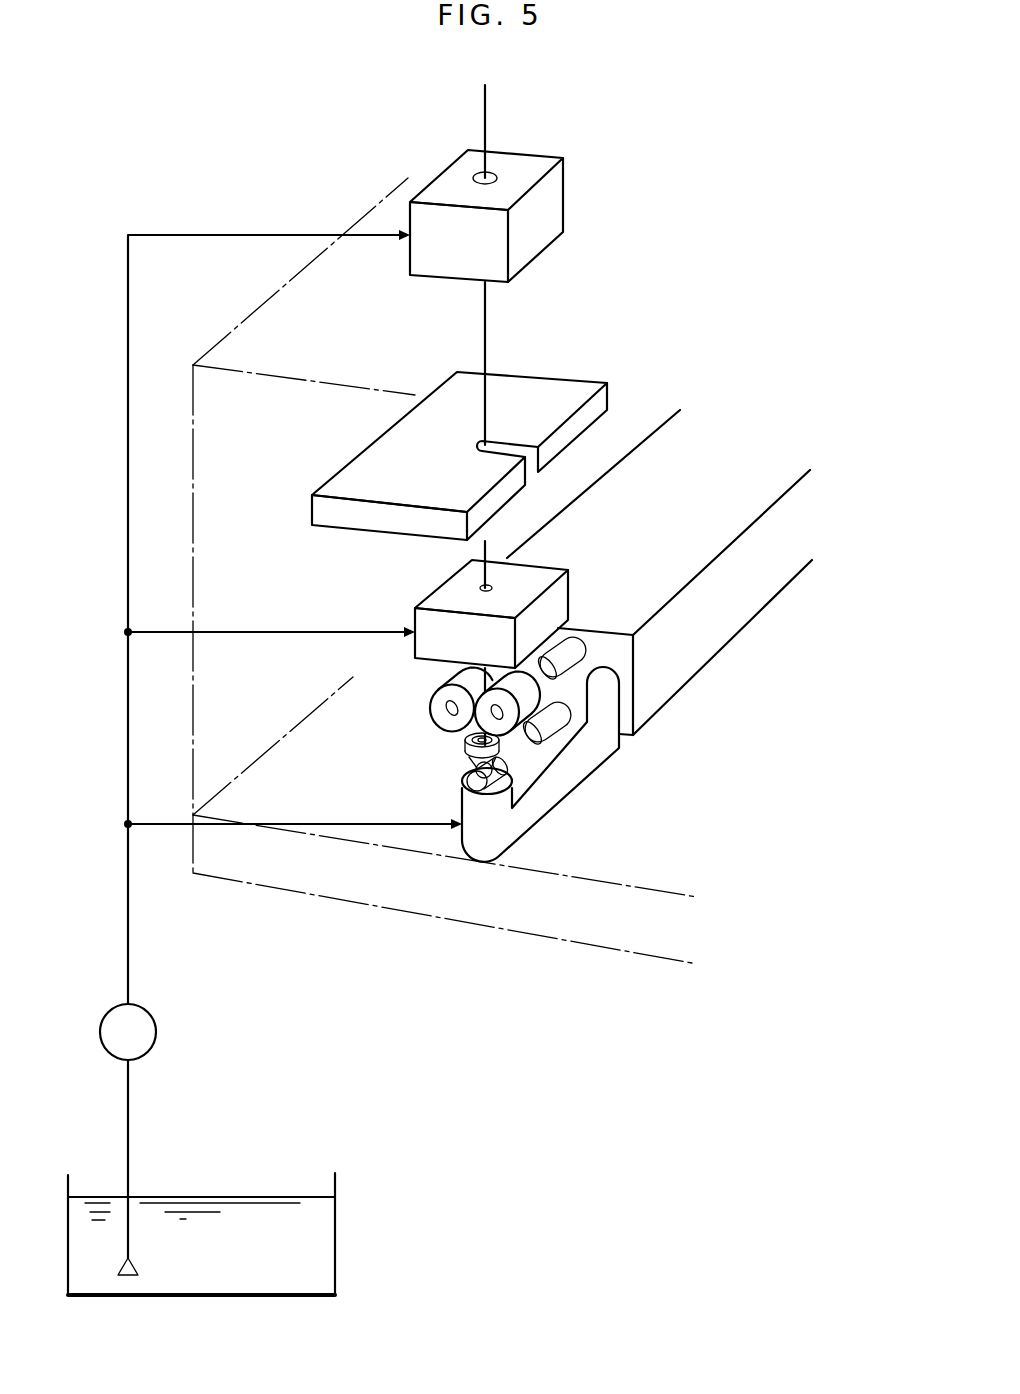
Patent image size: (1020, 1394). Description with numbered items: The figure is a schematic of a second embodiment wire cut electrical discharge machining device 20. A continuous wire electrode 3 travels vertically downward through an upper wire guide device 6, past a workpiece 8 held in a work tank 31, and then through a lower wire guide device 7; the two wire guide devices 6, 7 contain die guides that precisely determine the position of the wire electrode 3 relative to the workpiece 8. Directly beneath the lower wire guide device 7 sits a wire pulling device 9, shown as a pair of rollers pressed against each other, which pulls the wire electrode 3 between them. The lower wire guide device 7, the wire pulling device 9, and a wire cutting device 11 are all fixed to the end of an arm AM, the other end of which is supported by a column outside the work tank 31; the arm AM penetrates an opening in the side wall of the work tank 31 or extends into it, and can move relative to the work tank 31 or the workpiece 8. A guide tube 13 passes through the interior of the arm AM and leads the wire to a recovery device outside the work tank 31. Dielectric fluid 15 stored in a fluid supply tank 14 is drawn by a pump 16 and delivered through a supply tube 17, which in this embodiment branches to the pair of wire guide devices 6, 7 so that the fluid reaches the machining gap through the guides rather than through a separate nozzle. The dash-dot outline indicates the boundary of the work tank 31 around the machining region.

The wire electrode 3 is at (486, 113).
The upper wire guide device 6 is at (545, 205).
The lower wire guide device 7 is at (416, 642).
The workpiece 8 is at (410, 440).
The wire pulling device 9 is at (405, 705).
The wire cutting device 11 is at (430, 774).
The guide tube 13 is at (550, 793).
The fluid supply tank 14 is at (337, 1220).
The dielectric fluid 15 is at (220, 1253).
The pump 16 is at (156, 1022).
The supply tube 17 is at (130, 735).
The wire cut electrical discharge machining device 20 is at (268, 218).
The work tank 31 is at (252, 310).
The arm AM is at (677, 568).